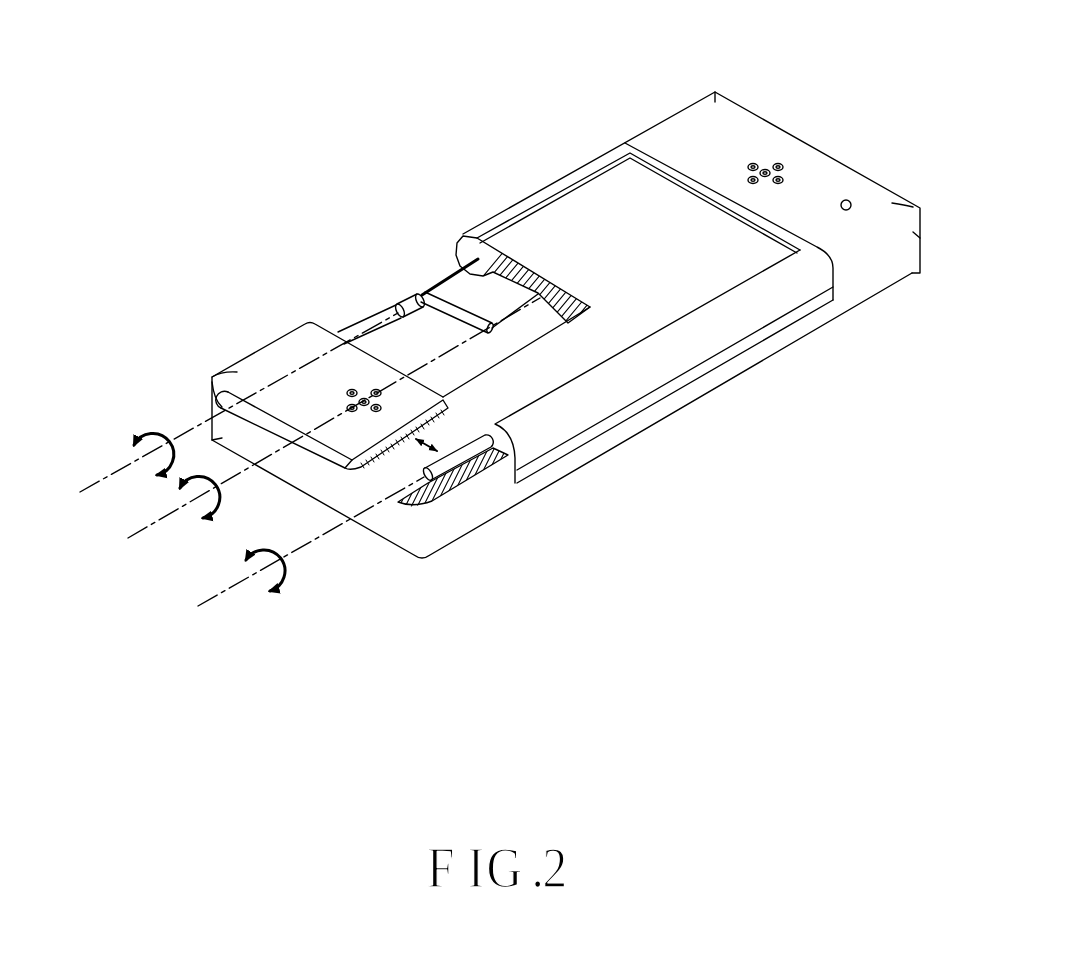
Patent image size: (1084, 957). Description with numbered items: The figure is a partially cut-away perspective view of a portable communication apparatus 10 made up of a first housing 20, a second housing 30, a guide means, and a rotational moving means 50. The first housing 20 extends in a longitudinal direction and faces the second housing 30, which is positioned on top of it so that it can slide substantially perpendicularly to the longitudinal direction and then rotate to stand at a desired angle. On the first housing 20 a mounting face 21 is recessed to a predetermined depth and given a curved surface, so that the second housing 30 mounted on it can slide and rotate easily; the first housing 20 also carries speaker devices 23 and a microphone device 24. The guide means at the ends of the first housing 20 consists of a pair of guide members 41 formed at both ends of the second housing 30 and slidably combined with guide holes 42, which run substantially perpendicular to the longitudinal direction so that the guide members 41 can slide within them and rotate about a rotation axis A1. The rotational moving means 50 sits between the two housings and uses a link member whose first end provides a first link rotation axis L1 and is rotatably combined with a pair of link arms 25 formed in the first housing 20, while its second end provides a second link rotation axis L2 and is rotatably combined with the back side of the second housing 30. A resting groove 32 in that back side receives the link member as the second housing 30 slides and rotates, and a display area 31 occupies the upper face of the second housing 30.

The portable communication apparatus 10 is at (435, 66).
The first housing 20 is at (884, 289).
The mounting face 21 is at (683, 387).
The speaker devices 23 is at (779, 166).
The microphone device 24 is at (851, 203).
The link arms 25 is at (398, 309).
The second housing 30 is at (497, 207).
The display 31 is at (594, 197).
The resting groove 32 is at (466, 268).
The guide members 41 is at (455, 460).
The guide holes 42 is at (400, 461).
The rotational moving means 50 is at (428, 280).
The first link rotation axis L1 is at (103, 478).
The second link rotation axis L2 is at (148, 523).
The rotation axis A1 is at (228, 591).